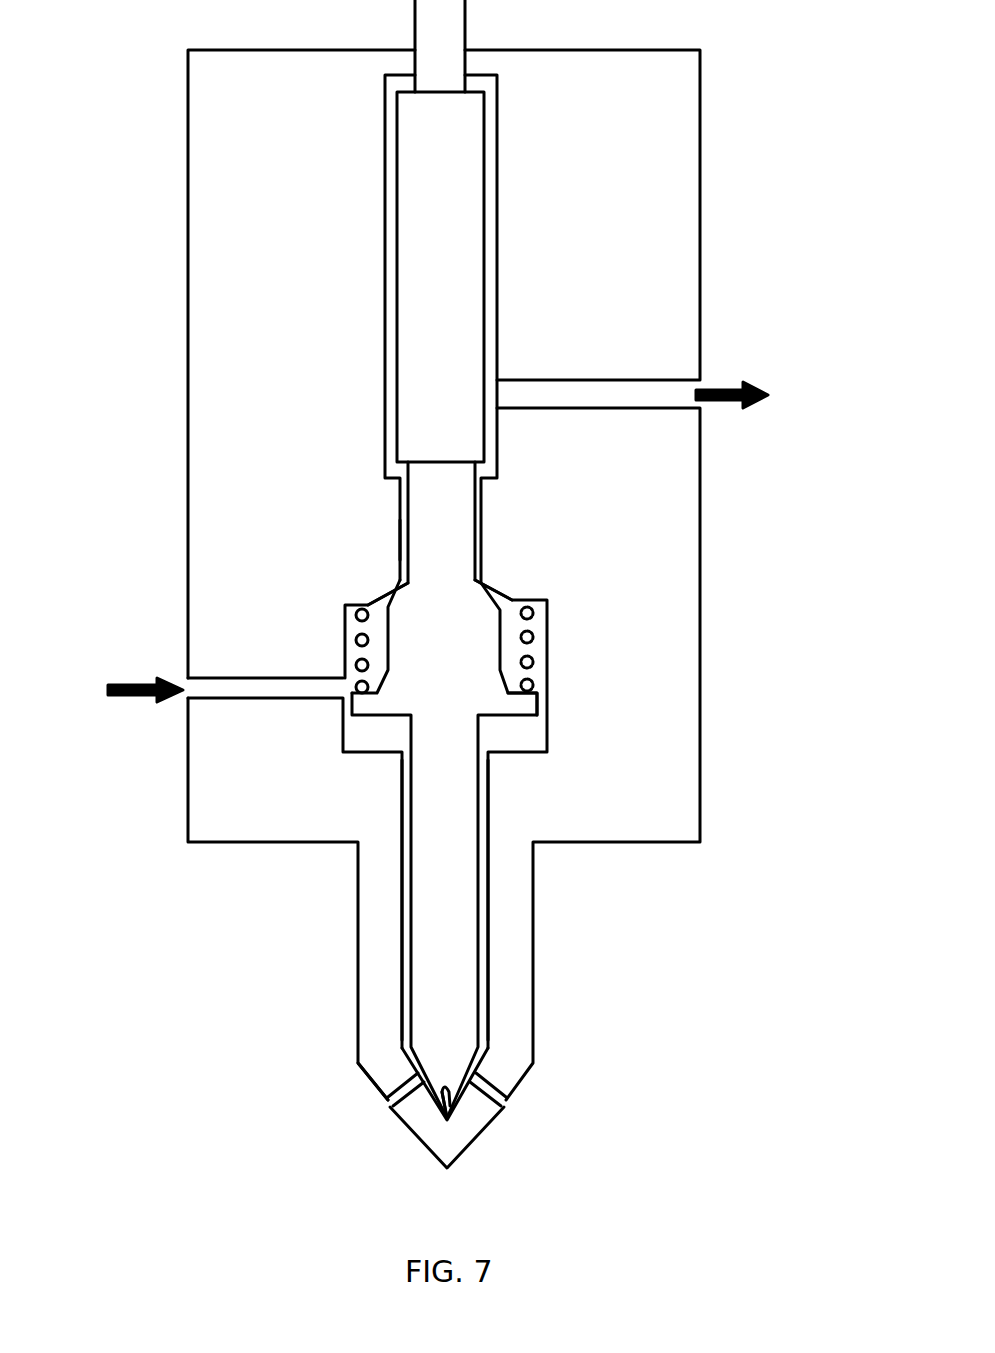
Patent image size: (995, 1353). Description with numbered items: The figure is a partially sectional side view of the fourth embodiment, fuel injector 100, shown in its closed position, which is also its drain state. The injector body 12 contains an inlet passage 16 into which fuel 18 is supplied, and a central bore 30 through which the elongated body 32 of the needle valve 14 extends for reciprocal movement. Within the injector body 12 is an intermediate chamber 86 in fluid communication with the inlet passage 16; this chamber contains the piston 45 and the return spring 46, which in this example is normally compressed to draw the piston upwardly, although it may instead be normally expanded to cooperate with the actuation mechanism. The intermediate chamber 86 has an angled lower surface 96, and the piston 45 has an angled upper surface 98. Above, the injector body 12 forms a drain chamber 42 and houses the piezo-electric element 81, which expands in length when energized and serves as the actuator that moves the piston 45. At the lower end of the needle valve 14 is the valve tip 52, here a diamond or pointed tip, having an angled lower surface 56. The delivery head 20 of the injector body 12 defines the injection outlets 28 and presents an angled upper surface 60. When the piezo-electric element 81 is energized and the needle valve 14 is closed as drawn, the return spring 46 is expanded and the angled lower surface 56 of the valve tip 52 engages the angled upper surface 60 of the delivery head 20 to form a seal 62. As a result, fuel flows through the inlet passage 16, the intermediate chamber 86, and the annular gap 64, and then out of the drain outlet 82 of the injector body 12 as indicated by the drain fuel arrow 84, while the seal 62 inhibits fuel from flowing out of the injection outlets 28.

The fuel injector 100 is at (738, 73).
The injector body 12 is at (166, 480).
The needle valve 14 is at (472, 502).
The inlet passage 16 is at (183, 682).
The fuel 18 is at (130, 693).
The delivery head 20 is at (368, 1079).
The injection outlet 28 is at (390, 1106).
The central bore 30 is at (400, 518).
The elongated body 32 is at (453, 837).
The drain chamber 42 is at (488, 232).
The piston 45 is at (508, 703).
The return spring 46 is at (533, 636).
The valve tip 52 is at (467, 1043).
The angled lower surface 56 is at (482, 1120).
The angled upper surface 60 is at (446, 1088).
The seal 62 is at (465, 1092).
The annular gap 64 is at (403, 552).
The piezo-electric element 81 is at (432, 298).
The drain outlet 82 is at (657, 393).
The drain fuel 84 is at (745, 404).
The intermediate chamber 86 is at (350, 652).
The angled lower surface 96 is at (490, 593).
The angled upper surface 98 is at (393, 587).